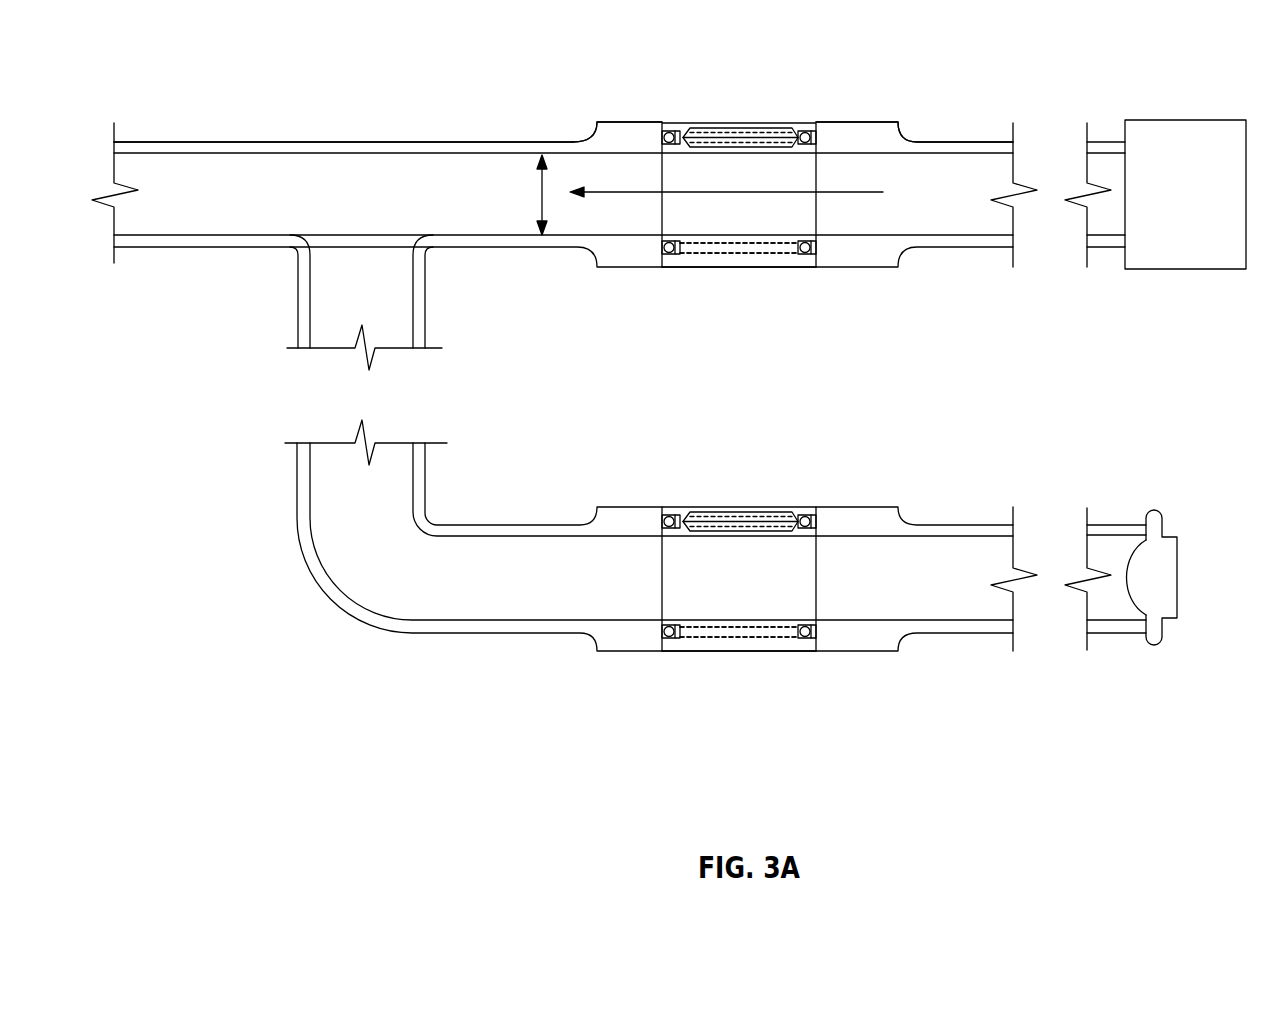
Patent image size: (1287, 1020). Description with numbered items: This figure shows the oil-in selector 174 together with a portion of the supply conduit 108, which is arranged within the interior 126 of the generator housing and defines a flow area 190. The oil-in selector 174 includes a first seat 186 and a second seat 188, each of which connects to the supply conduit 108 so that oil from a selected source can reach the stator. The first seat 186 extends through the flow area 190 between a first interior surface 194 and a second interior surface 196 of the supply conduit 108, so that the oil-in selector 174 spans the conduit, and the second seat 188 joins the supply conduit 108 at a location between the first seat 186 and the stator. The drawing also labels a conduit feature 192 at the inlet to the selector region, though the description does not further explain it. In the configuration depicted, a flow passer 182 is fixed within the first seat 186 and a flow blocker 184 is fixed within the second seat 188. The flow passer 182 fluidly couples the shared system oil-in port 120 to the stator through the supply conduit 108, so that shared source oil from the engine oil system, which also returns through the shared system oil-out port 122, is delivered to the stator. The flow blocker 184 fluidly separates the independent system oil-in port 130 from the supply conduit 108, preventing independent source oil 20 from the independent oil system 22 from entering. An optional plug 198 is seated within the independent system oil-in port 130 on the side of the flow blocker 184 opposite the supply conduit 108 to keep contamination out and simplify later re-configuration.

The shared system oil-out port 122 is at (210, 136).
The supply conduit 108 is at (394, 213).
The first interior surface 194 is at (463, 156).
The coupling inlet end 192 is at (606, 143).
The interior 126 is at (882, 104).
The flow area 190 is at (541, 200).
The independent source oil 20 is at (735, 193).
The first seat 186 is at (683, 283).
The flow passer 182 is at (777, 248).
The second interior surface 196 is at (933, 235).
The independent system oil-in port 130 is at (1108, 166).
The independent oil system 22 is at (1200, 209).
The oil-in selector 174 is at (300, 696).
The second seat 188 is at (701, 667).
The flow blocker 184 is at (777, 633).
The shared system oil-in port 120 is at (1112, 613).
The plug 198 is at (1160, 585).